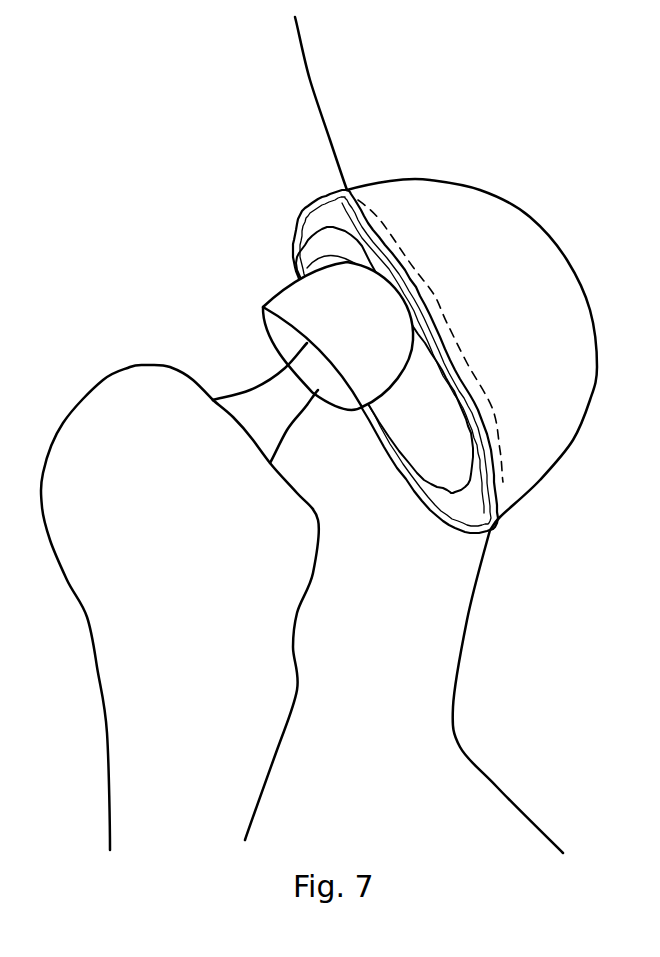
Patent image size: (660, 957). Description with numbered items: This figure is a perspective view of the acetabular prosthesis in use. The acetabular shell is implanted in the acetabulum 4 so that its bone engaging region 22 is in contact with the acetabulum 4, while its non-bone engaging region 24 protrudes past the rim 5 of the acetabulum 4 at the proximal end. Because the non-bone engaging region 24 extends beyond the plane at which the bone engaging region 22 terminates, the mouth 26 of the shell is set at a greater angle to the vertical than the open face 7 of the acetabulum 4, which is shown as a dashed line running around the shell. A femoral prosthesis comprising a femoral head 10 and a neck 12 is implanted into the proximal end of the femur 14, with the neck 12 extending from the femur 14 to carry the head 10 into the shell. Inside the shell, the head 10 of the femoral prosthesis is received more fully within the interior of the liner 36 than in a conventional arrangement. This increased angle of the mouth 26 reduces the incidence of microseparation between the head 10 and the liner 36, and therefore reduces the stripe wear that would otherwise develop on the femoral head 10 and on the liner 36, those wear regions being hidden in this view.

The acetabulum 4 is at (597, 214).
The rim of the acetabulum 5 is at (356, 176).
The open face of the acetabulum 7 is at (461, 344).
The femoral head 10 is at (287, 302).
The neck 12 is at (270, 428).
The femur 14 is at (108, 612).
The bone engaging region 22 is at (483, 225).
The non-bone engaging region 24 is at (330, 197).
The mouth of the shell 26 is at (296, 214).
The liner 36 is at (340, 258).